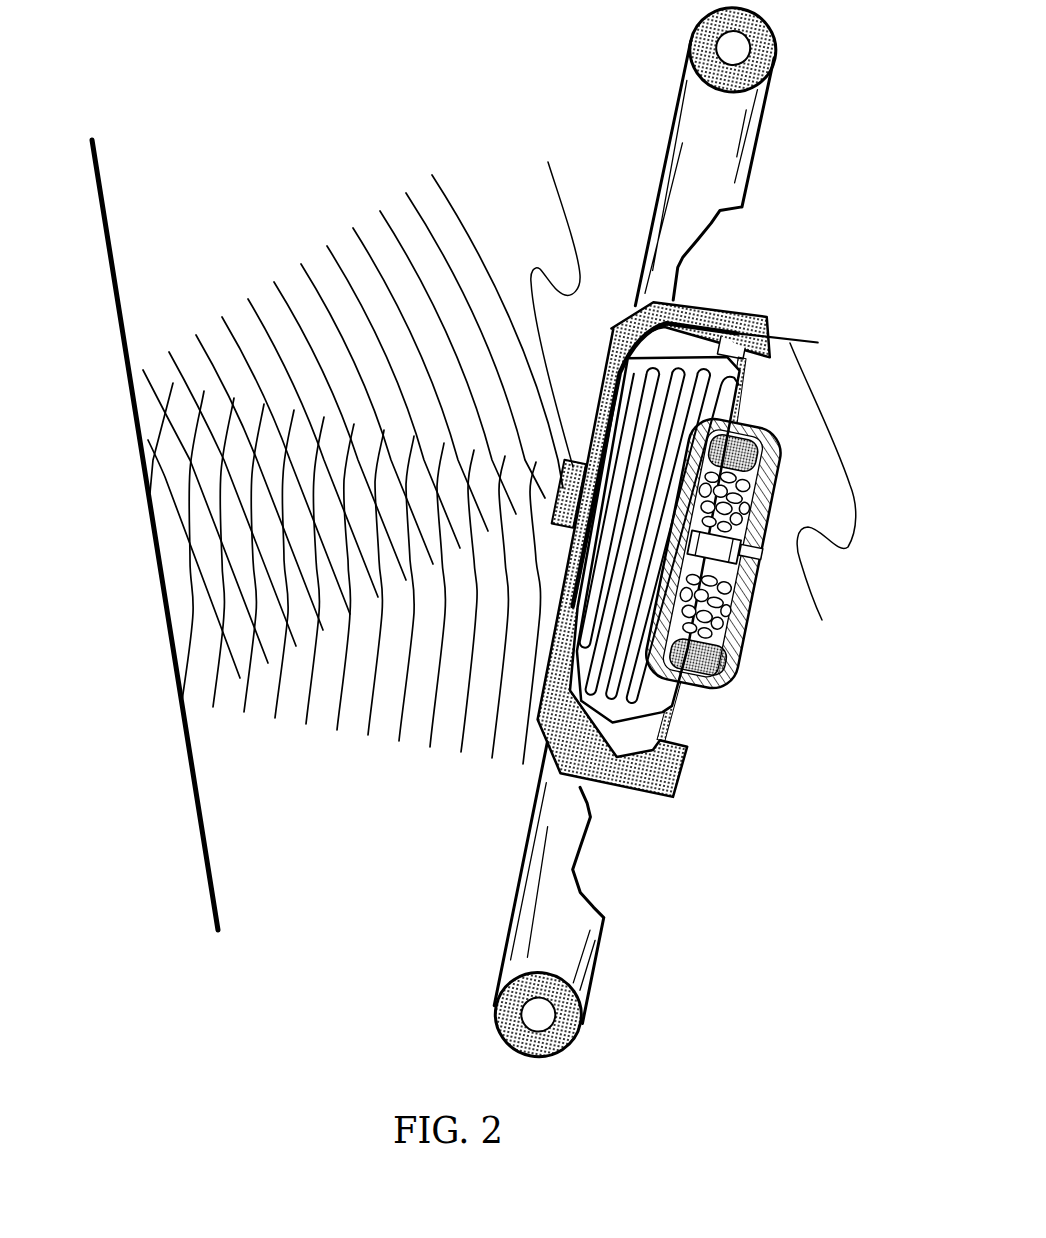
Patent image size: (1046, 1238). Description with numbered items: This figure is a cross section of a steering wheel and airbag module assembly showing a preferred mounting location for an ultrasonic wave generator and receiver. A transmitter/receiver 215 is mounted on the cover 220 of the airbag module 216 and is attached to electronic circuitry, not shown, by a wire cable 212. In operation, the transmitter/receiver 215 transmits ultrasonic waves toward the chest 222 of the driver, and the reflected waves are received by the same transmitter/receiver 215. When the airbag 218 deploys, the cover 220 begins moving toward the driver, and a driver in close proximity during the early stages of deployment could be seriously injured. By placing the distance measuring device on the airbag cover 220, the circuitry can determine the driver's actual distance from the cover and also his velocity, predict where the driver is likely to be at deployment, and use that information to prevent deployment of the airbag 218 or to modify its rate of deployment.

The wire cable 212 is at (826, 510).
The transmitter/receiver 215 is at (542, 295).
The airbag module 216 is at (722, 311).
The airbag 218 is at (687, 760).
The cover 220 is at (613, 317).
The chest 222 is at (150, 493).